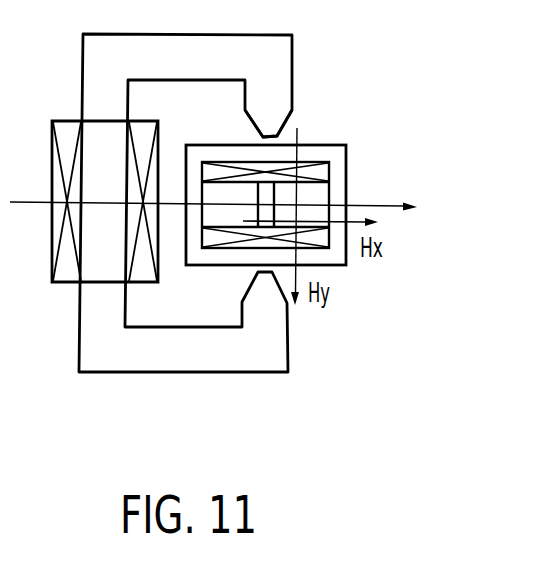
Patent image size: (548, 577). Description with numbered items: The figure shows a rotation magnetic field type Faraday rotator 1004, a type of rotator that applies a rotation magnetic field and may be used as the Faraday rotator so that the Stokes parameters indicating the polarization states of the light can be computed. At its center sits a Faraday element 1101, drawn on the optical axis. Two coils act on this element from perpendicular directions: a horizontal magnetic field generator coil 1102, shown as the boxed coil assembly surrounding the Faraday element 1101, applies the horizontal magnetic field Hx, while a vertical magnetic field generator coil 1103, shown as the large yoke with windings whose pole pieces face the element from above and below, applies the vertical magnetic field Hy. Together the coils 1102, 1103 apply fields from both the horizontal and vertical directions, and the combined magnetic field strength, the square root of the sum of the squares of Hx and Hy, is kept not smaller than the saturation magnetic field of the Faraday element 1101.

The rotation magnetic field type Faraday rotator 1004 is at (312, 115).
The Faraday element 1101 is at (275, 200).
The horizontal magnetic field generator coil 1102 is at (312, 167).
The vertical magnetic field generator coil 1103 is at (177, 373).